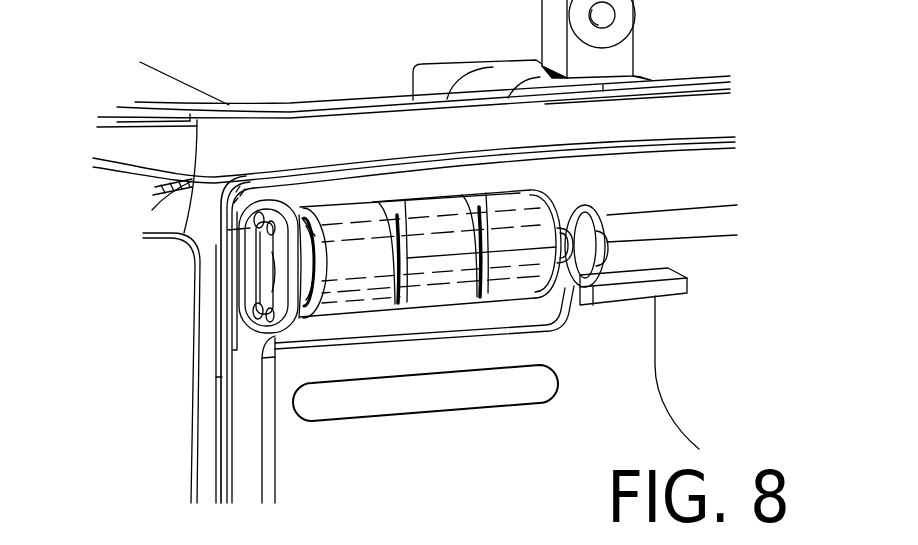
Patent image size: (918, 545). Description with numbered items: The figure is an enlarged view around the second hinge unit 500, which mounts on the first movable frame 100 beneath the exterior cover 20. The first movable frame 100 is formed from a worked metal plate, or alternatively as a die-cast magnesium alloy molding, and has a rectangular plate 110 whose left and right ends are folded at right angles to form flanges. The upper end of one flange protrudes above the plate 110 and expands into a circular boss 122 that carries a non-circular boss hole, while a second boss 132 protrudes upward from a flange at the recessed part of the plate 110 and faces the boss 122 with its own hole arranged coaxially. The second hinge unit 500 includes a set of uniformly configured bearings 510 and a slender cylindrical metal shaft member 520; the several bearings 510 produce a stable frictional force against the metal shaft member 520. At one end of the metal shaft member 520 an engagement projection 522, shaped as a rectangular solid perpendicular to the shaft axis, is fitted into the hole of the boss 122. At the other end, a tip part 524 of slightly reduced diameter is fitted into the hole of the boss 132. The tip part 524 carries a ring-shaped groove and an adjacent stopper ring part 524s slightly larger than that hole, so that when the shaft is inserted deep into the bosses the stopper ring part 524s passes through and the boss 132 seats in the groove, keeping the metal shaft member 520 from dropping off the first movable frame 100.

The exterior cover 20 is at (242, 77).
The first movable frame 100 is at (449, 320).
The plate 110 is at (637, 413).
The boss 122 is at (240, 256).
The boss 132 is at (584, 207).
The second hinge unit 500 is at (500, 177).
The bearing 510 is at (420, 213).
The metal shaft member 520 is at (183, 295).
The engagement projection 522 is at (256, 290).
The tip part 524 is at (609, 240).
The stopper ring part 524s is at (707, 254).